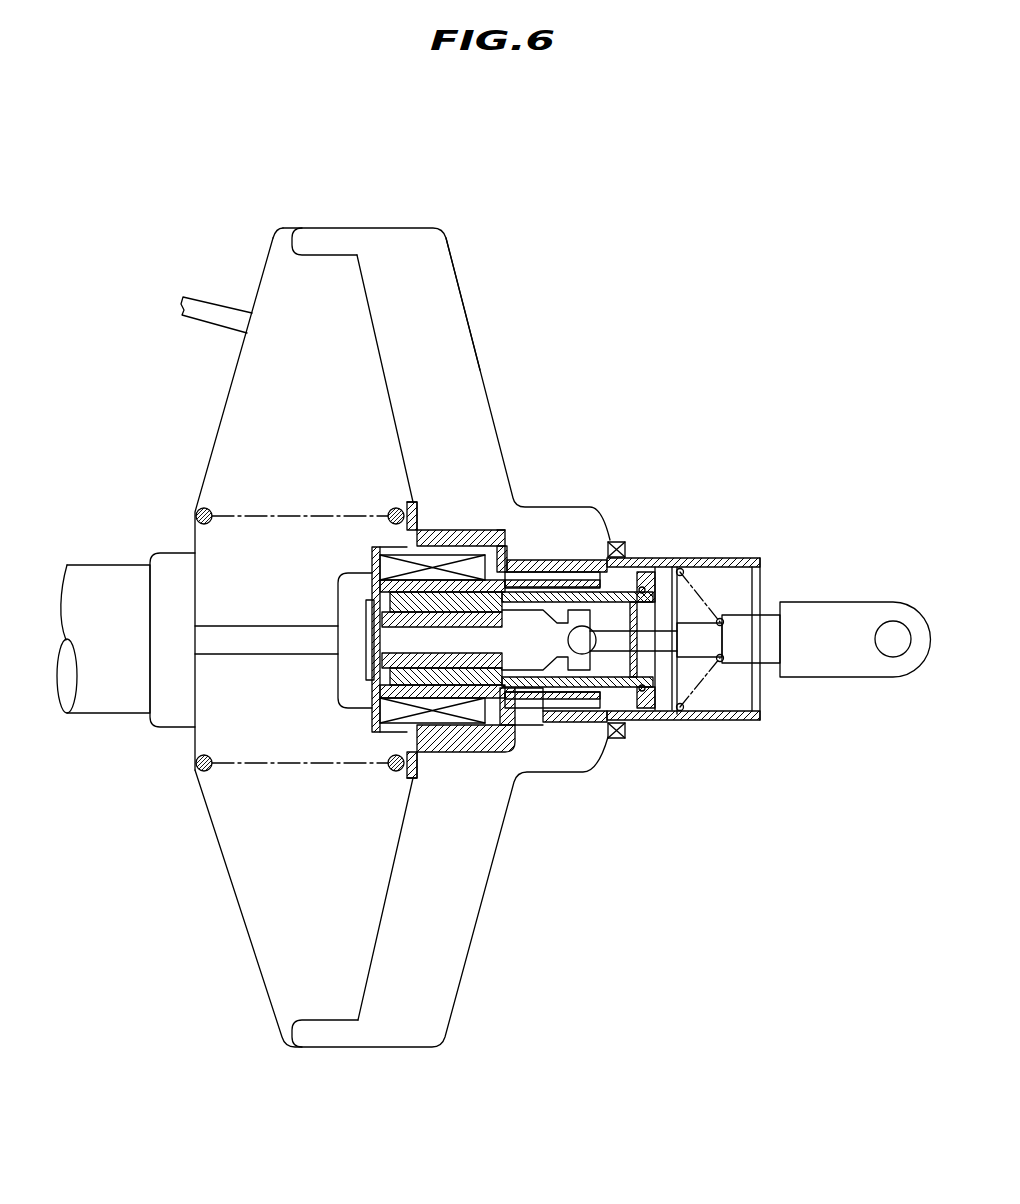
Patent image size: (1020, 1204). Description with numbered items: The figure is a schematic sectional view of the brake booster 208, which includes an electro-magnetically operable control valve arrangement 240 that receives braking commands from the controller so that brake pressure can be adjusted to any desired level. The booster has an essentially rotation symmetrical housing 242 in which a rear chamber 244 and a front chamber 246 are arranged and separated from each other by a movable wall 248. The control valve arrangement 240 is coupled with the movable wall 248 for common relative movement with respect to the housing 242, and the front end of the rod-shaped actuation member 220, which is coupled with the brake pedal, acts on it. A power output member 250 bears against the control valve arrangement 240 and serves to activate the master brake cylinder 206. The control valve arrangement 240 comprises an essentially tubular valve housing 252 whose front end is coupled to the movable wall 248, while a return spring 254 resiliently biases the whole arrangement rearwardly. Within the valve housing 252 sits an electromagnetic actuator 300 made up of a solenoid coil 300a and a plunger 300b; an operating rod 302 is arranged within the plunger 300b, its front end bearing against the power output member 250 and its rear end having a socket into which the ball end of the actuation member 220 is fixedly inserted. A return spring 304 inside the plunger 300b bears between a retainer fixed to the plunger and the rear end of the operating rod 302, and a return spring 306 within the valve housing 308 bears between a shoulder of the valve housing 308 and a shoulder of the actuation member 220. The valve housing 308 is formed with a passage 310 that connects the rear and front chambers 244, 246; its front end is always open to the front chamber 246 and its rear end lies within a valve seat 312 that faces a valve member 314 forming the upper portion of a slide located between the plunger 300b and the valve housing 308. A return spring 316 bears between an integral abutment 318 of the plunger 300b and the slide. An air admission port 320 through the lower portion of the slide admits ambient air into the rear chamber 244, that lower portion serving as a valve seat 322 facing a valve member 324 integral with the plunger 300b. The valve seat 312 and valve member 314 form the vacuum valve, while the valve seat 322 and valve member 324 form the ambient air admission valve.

The master brake cylinder 206 is at (95, 580).
The brake booster 208 is at (565, 252).
The rod-shaped actuation member 220 is at (850, 602).
The control valve arrangement 240 is at (677, 523).
The housing 242 is at (367, 228).
The rear chamber 244 is at (437, 280).
The front chamber 246 is at (255, 390).
The movable wall 248 is at (390, 933).
The power output member 250 is at (203, 635).
The valve housing 252 is at (535, 562).
The return spring 254 is at (192, 513).
The electromagnetic actuator 300 is at (643, 333).
The solenoid coil 300a is at (427, 562).
The plunger 300b is at (470, 600).
The operating rod 302 is at (512, 637).
The return spring 304 is at (662, 695).
The return spring 306 is at (713, 720).
The valve housing 308 is at (478, 755).
The passage 310 is at (575, 583).
The valve seat 312 is at (618, 542).
The valve member 314 is at (645, 578).
The return spring 316 is at (672, 587).
The integral abutment 318 is at (680, 572).
The air admission port 320 is at (612, 740).
The valve seat 322 is at (616, 738).
The valve member 324 is at (557, 723).